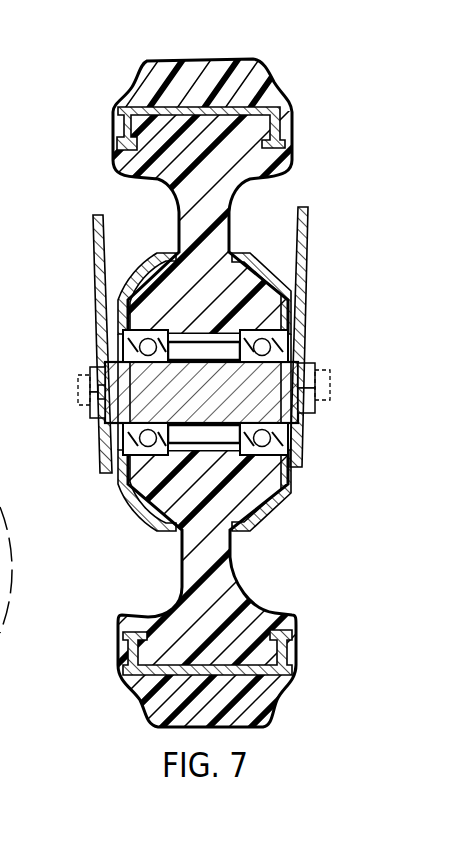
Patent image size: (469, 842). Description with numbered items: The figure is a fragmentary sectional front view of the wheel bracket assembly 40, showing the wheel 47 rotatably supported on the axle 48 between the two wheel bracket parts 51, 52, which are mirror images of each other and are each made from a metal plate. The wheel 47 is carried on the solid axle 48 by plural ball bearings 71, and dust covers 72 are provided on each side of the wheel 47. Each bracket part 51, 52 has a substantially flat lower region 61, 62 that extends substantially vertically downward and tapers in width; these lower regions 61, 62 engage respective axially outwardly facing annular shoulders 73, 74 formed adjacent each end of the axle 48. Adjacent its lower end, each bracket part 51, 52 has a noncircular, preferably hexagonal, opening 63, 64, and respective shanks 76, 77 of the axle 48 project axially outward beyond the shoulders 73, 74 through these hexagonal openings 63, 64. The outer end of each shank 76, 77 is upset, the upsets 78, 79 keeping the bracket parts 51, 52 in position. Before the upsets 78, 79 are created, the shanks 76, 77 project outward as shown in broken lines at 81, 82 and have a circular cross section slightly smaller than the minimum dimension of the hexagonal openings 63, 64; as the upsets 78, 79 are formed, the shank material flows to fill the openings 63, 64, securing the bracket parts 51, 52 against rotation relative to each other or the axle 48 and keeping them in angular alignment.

The wheel bracket assembly 40 is at (207, 324).
The wheel 47 is at (272, 79).
The axle 48 is at (317, 390).
The wheel bracket part 51 is at (311, 212).
The wheel bracket part 52 is at (97, 228).
The lower region 61 is at (298, 315).
The lower region 62 is at (108, 308).
The noncircular opening 63 is at (310, 403).
The noncircular opening 64 is at (92, 378).
The ball bearings 71 is at (113, 343).
The dust covers 72 is at (264, 256).
The annular shoulder 73 is at (298, 383).
The annular shoulder 74 is at (112, 418).
The shank 76 is at (311, 385).
The shank 77 is at (100, 392).
The upset 78 is at (312, 408).
The upset 79 is at (103, 410).
The shank prior to upsetting (broken lines) 81 is at (330, 398).
The shank prior to upsetting (broken lines) 82 is at (80, 404).